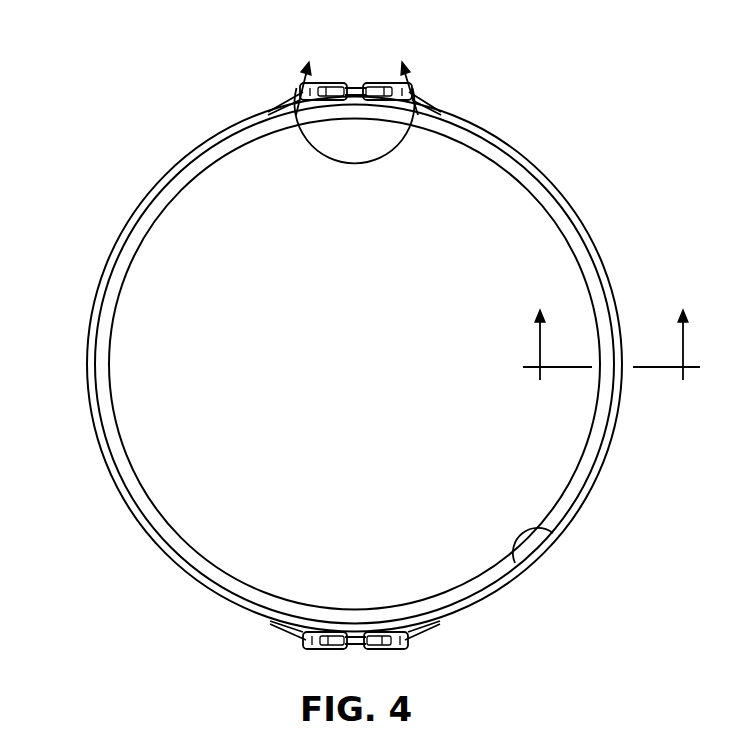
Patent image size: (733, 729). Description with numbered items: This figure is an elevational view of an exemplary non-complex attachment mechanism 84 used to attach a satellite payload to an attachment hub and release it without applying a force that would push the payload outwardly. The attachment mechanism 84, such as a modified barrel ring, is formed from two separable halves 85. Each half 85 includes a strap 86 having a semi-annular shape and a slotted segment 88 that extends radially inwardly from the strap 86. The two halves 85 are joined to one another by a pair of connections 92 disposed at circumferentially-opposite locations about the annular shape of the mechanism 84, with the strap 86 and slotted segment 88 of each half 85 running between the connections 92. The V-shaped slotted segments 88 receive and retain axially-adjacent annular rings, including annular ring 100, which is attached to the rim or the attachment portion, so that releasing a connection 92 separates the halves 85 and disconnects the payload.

The attachment mechanism 84 is at (390, 384).
The separable halves 85 is at (390, 364).
The strap 86 is at (617, 414).
The slotted segment 88 is at (553, 533).
The connections 92 is at (355, 70).
The annular ring 100 is at (578, 467).